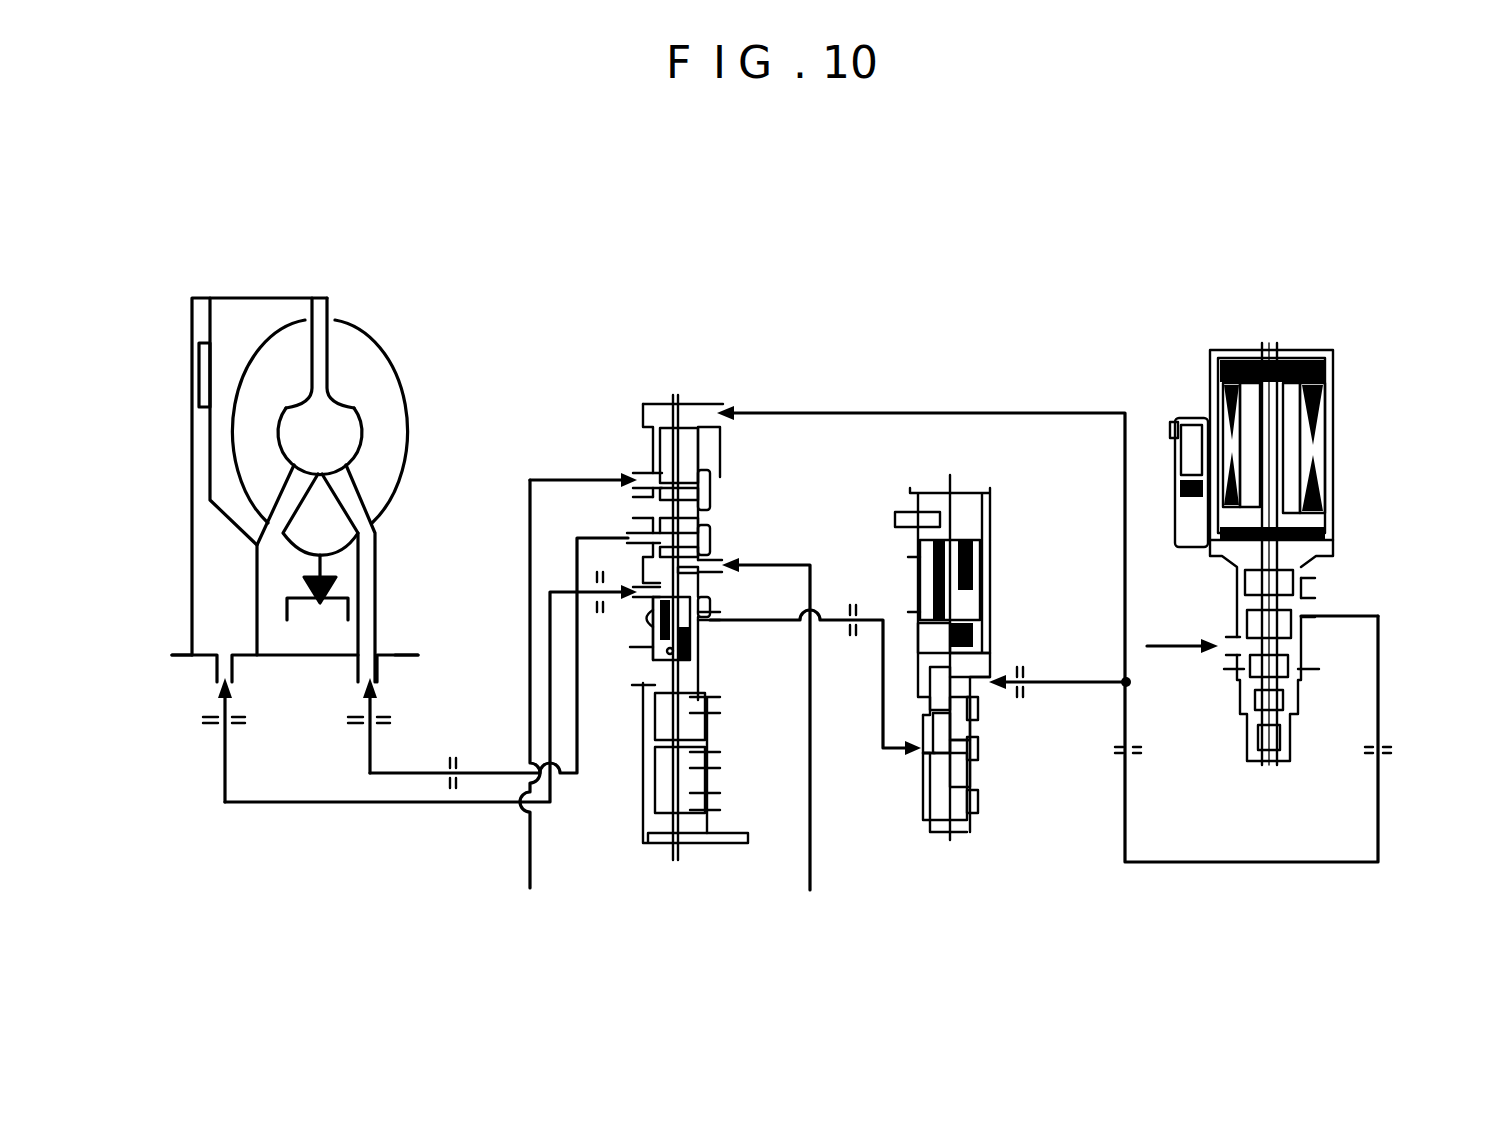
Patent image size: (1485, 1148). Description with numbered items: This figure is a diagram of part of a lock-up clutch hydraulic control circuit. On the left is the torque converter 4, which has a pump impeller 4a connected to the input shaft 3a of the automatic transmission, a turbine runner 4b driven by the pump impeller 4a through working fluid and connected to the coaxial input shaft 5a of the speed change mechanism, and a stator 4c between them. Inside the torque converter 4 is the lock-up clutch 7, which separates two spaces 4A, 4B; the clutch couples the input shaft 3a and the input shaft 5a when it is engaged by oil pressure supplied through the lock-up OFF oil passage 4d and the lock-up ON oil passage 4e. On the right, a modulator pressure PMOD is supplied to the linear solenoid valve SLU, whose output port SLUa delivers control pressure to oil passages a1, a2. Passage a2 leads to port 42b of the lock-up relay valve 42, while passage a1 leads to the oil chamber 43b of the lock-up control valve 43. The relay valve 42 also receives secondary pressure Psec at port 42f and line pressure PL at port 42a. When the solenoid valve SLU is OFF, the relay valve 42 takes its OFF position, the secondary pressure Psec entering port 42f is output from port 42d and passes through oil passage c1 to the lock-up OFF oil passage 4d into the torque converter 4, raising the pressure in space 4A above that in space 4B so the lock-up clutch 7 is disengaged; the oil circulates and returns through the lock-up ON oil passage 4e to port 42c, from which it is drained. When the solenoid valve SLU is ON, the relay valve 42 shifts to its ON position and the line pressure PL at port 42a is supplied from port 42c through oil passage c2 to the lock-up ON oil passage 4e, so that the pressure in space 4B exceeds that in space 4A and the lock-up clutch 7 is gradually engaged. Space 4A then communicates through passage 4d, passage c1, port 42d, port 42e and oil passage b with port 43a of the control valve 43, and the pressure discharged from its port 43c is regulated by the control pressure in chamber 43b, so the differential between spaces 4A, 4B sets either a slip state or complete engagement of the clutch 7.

The torque converter 4 is at (320, 284).
The pump impeller 4a is at (360, 337).
The turbine runner 4b is at (293, 330).
The stator 4c is at (323, 513).
The lock-up OFF oil passage 4d is at (230, 684).
The lock-up ON oil passage 4e is at (360, 681).
The space 4A is at (200, 468).
The space 4B is at (228, 493).
The lock-up clutch 7 is at (203, 343).
The input shaft 3a is at (180, 663).
The input shaft 5a is at (402, 662).
The lock-up relay valve 42 is at (679, 387).
The port 42a is at (728, 555).
The port 42b is at (723, 403).
The port 42c is at (633, 530).
The port 42d is at (636, 600).
The port 42e is at (713, 628).
The port 42f is at (640, 470).
The lock-up control valve 43 is at (947, 473).
The port 43a is at (913, 760).
The oil chamber 43b is at (993, 673).
The port 43c is at (923, 717).
The oil passage a1 is at (1080, 680).
The oil passage a2 is at (1093, 411).
The oil passage b is at (832, 618).
The oil passage c1 is at (368, 807).
The oil passage c2 is at (490, 767).
The secondary pressure Psec is at (565, 700).
The line pressure PL is at (778, 748).
The modulator pressure PMOD is at (1178, 626).
The linear solenoid valve SLU is at (1271, 333).
The output port SLUa is at (1319, 614).